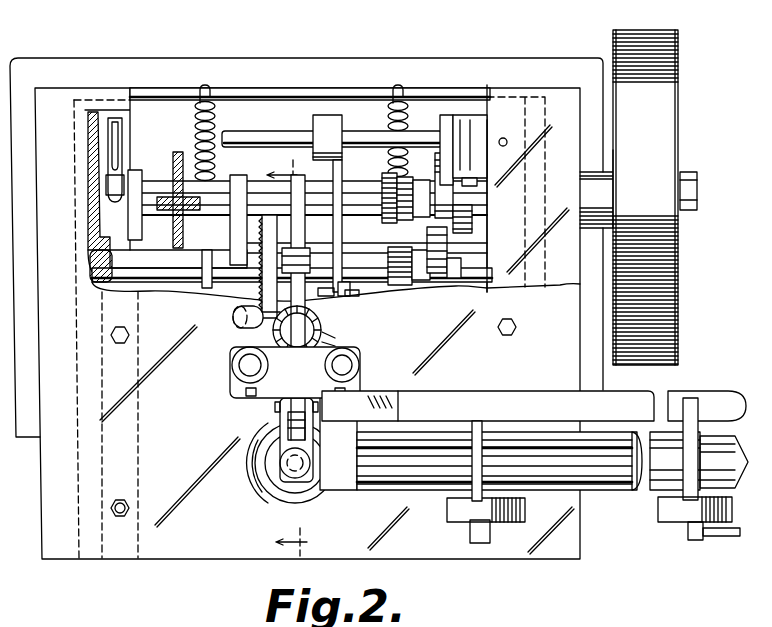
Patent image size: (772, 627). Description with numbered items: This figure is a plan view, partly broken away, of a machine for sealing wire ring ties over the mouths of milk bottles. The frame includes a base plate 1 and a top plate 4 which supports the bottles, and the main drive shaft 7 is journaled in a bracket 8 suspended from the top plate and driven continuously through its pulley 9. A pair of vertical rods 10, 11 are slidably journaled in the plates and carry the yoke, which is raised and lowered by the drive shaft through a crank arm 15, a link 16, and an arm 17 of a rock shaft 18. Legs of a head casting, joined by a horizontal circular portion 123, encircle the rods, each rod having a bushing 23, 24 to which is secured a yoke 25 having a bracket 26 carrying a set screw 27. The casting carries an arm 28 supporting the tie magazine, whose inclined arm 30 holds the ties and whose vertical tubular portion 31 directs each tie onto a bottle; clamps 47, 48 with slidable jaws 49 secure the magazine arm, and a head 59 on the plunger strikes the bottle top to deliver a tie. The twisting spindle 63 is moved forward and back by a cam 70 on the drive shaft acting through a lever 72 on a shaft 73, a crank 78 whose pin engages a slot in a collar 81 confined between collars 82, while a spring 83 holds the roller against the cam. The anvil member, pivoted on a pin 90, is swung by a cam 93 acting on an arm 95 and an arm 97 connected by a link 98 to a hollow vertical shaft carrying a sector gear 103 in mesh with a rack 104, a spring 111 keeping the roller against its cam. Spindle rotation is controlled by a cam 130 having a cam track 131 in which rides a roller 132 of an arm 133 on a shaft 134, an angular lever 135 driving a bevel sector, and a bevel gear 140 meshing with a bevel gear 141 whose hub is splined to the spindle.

The base plate 1 is at (107, 75).
The top plate 4 is at (205, 555).
The main drive shaft 7 is at (697, 196).
The bracket 8 is at (177, 150).
The pulley 9 is at (656, 113).
The vertical rod 10 is at (356, 362).
The vertical rod 11 is at (245, 365).
The crank arm 15 is at (137, 180).
The link 16 is at (115, 160).
The arm 17 is at (120, 214).
The rock shaft 18 is at (372, 240).
The bushing 23 is at (362, 368).
The bushing 24 is at (236, 380).
The yoke 25 is at (295, 372).
The bracket 26 is at (262, 422).
The set screw 27 is at (262, 497).
The arm 28 is at (478, 394).
The inclined arm 30 is at (560, 418).
The vertical tubular portion 31 is at (278, 460).
The clamp 47 is at (470, 528).
The clamp 48 is at (682, 516).
The jaw 49 is at (700, 418).
The head 59 is at (262, 478).
The twisting spindle 63 is at (300, 238).
The cam 70 is at (385, 180).
The lever 72 is at (425, 278).
The shaft 73 is at (482, 278).
The crank 78 is at (240, 324).
The collar 81 is at (322, 333).
The collar 82 is at (326, 296).
The spring 83 is at (412, 100).
The pin 90 is at (262, 405).
The cam 93 is at (212, 286).
The arm 95 is at (262, 195).
The arm 97 is at (214, 304).
The link 98 is at (284, 240).
The sector gear 103 is at (262, 318).
The rack 104 is at (284, 226).
The spring 111 is at (207, 92).
The horizontal circular portion 123 is at (282, 508).
The cam 130 is at (445, 175).
The cam track 131 is at (437, 194).
The roller 132 is at (440, 230).
The arm 133 is at (455, 150).
The shaft 134 is at (418, 132).
The angular lever 135 is at (340, 294).
The bevel gear 140 is at (322, 337).
The bevel gear 141 is at (318, 346).